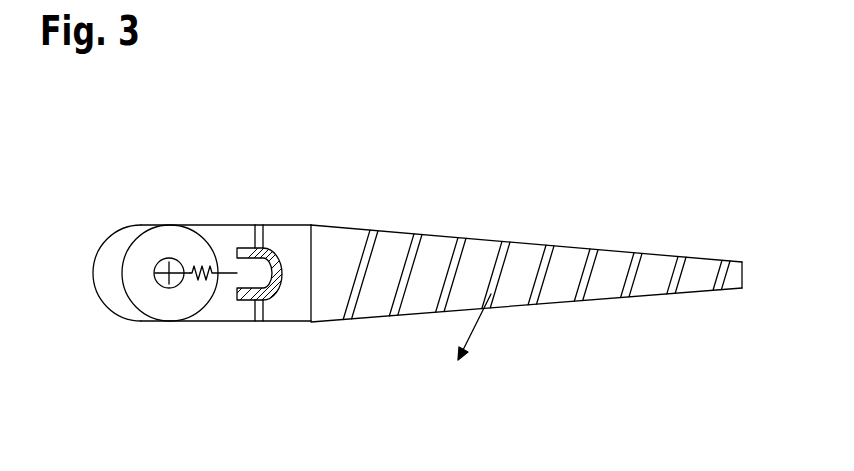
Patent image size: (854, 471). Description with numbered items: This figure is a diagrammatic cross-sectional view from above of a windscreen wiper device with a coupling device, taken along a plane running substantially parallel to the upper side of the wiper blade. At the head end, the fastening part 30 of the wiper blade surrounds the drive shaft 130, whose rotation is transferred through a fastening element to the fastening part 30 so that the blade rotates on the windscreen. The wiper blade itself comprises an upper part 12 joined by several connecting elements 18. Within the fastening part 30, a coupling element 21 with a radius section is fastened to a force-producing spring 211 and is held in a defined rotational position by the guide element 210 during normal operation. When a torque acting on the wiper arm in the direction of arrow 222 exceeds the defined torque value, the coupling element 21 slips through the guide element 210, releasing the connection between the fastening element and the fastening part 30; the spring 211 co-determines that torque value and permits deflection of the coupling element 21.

The fastening part 30 is at (117, 231).
The drive shaft 130 is at (179, 288).
The spring 211 is at (193, 262).
The guide element 210 is at (263, 235).
The coupling element 21 is at (279, 299).
The upper part 12 is at (542, 244).
The connecting elements 18 is at (630, 285).
The arrow 222 is at (485, 322).